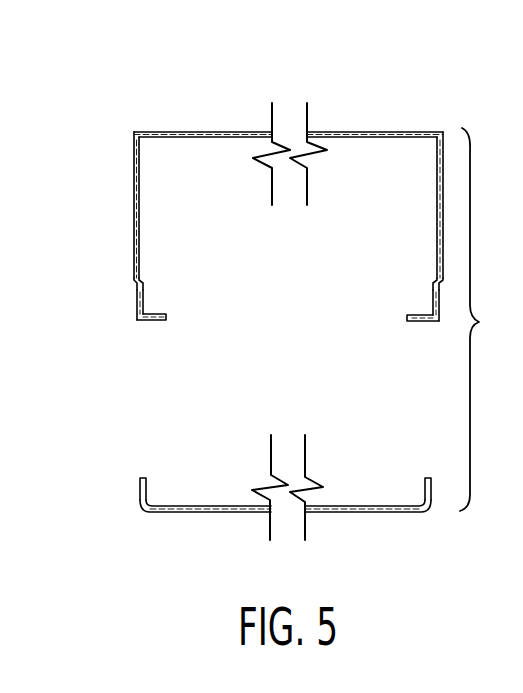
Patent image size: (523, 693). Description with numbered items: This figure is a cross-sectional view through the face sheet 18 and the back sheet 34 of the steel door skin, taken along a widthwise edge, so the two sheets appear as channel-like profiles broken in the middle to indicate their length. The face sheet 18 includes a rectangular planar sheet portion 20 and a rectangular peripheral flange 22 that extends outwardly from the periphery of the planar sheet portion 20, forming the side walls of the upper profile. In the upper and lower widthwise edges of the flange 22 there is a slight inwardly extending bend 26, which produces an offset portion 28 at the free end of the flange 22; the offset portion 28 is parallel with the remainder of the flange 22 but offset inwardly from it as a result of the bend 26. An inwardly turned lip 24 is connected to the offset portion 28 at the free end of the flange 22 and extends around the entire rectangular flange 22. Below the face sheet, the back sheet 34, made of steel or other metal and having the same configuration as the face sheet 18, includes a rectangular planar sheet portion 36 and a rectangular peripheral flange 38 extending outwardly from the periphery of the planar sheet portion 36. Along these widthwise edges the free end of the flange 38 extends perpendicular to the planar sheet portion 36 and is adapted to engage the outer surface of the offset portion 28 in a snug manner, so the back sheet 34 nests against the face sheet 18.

The face sheet 18 is at (155, 123).
The planar sheet portion 20 is at (203, 132).
The peripheral flange 22 is at (134, 210).
The inwardly turned lip 24 is at (157, 322).
The bend 26 is at (134, 283).
The offset portion 28 is at (137, 308).
The back sheet 34 is at (185, 518).
The planar sheet portion 36 is at (372, 513).
The peripheral flange 38 is at (140, 498).